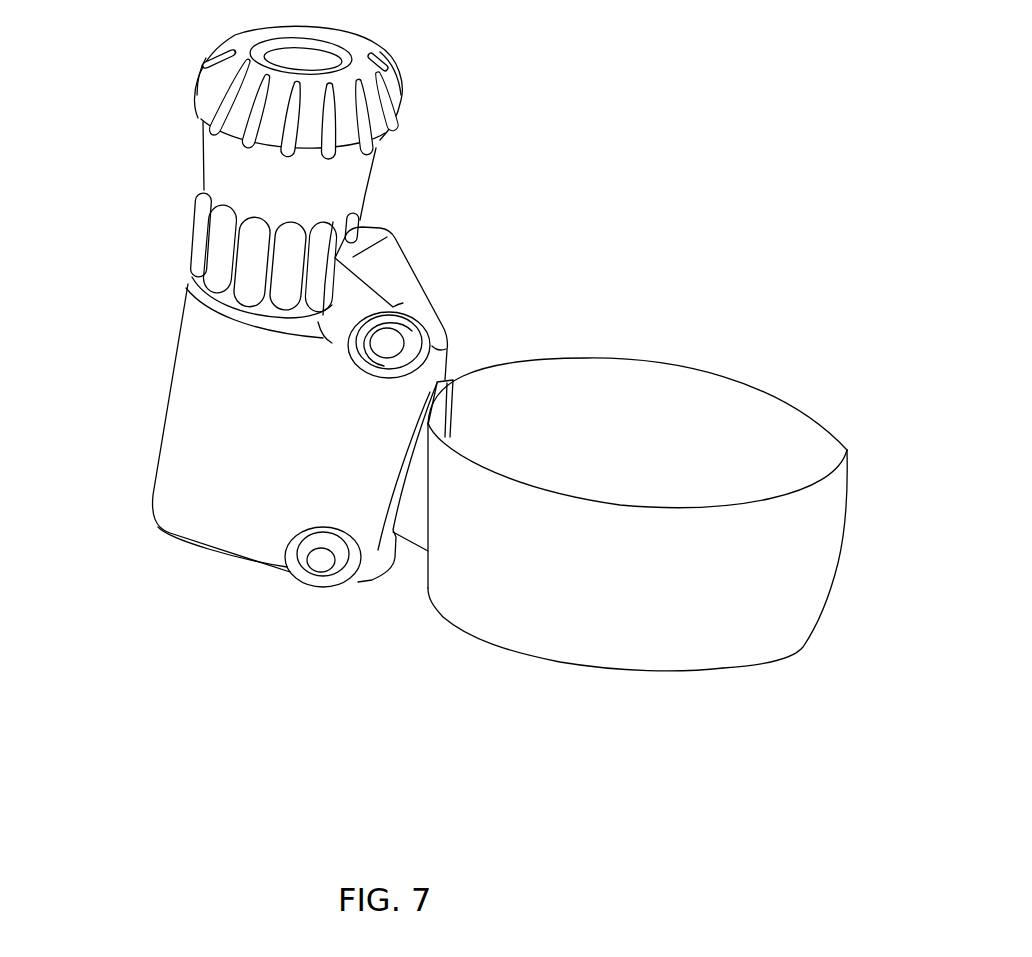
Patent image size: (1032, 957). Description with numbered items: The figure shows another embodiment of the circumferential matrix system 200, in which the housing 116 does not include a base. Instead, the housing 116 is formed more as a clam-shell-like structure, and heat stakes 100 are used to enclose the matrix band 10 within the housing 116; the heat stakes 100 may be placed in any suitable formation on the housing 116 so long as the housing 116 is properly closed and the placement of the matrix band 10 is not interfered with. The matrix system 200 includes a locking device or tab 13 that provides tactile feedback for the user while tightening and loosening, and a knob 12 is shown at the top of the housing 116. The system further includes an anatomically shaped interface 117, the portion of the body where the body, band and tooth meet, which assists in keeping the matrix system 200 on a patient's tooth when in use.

The matrix system 200 is at (618, 126).
The knob 12 is at (377, 165).
The locking device/tab 13 is at (362, 220).
The heat stakes 100 is at (388, 343).
The housing 116 is at (190, 410).
The anatomically shaped interface 117 is at (390, 480).
The matrix band 10 is at (797, 608).